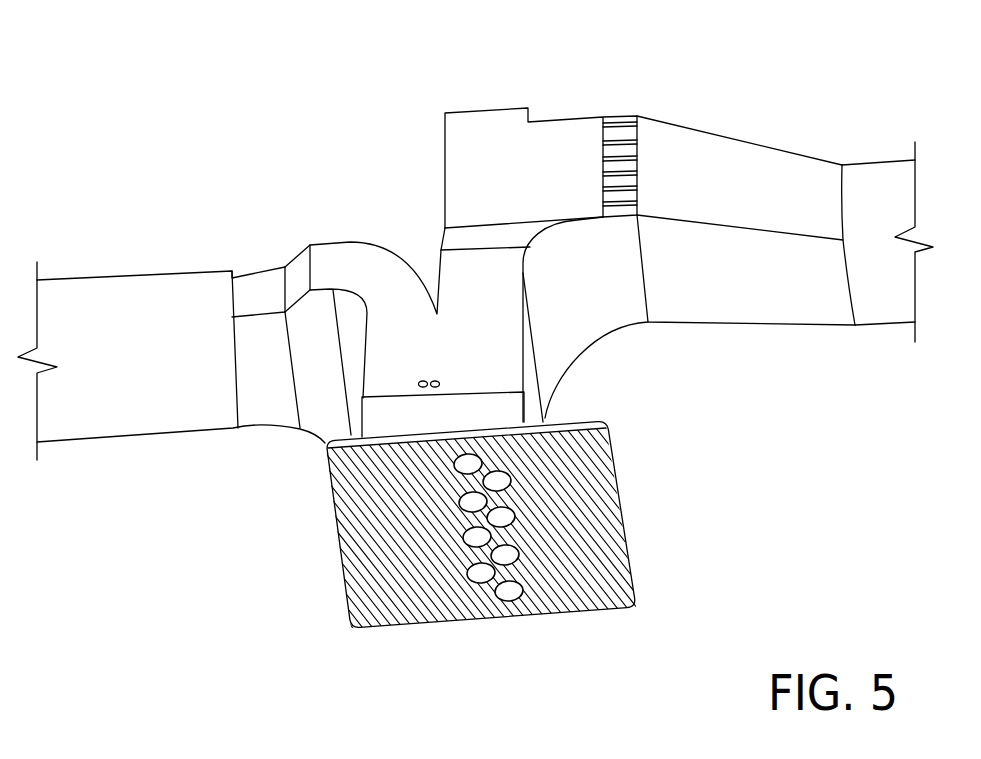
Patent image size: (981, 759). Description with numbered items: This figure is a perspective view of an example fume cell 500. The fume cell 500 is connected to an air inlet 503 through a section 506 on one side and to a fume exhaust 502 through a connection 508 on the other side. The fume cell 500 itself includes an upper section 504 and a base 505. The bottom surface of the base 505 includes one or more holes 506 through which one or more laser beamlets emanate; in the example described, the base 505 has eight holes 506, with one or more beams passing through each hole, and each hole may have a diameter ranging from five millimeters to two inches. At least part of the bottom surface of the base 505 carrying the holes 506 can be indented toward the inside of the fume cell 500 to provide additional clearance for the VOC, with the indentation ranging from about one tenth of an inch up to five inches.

The fume cell 500 is at (158, 60).
The fume exhaust 502 is at (160, 282).
The air inlet 503 is at (885, 162).
The upper section 504 is at (445, 170).
The base 505 is at (527, 395).
The section 506 is at (740, 140).
The connection 508 is at (367, 242).